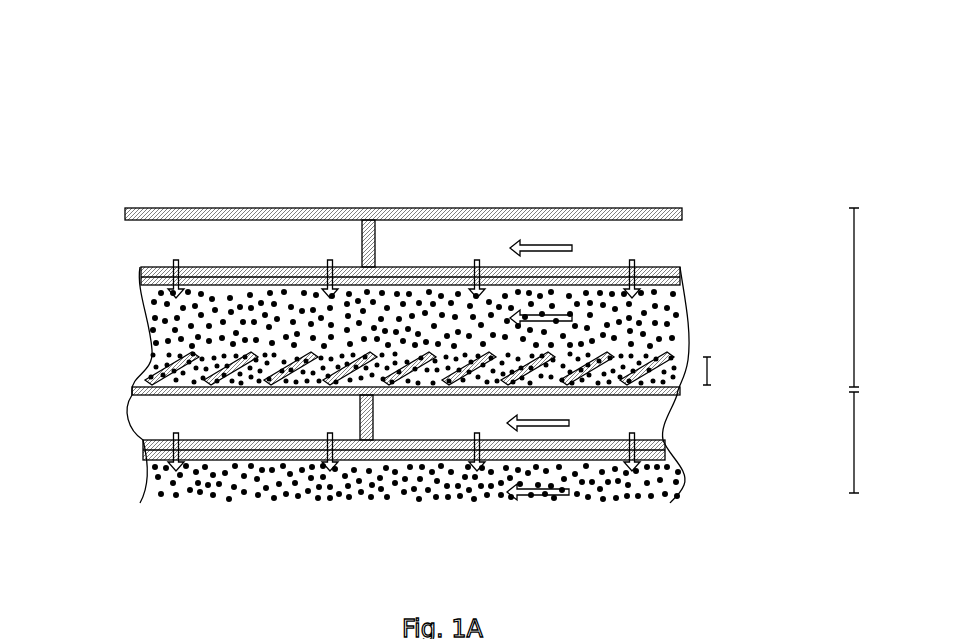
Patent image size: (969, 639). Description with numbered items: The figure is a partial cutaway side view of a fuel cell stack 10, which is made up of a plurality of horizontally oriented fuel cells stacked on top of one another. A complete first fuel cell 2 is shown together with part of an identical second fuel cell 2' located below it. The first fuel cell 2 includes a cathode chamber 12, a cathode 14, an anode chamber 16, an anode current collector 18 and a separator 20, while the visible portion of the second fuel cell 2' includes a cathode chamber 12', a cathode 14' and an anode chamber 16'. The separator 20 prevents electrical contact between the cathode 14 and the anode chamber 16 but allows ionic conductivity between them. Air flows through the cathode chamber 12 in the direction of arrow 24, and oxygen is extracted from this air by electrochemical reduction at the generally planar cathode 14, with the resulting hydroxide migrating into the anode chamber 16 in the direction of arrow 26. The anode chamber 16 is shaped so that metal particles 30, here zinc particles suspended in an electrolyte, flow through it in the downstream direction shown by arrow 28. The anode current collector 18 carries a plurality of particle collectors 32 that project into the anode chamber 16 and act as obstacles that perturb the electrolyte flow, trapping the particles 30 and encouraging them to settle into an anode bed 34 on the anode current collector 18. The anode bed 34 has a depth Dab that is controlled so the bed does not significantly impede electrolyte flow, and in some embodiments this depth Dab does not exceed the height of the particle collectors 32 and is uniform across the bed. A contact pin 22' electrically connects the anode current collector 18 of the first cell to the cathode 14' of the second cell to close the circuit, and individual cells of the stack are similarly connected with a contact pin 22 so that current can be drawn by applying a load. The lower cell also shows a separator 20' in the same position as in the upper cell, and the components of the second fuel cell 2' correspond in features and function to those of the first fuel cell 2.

The fuel cell stack 10 is at (168, 90).
The cathode chamber 12 is at (403, 182).
The cathode chamber 12' is at (632, 462).
The cathode 14 is at (410, 227).
The cathode 14' is at (404, 511).
The anode chamber 16 is at (410, 232).
The anode chamber 16' is at (365, 514).
The anode current collector 18 is at (182, 388).
The separator 20 is at (360, 317).
The second particle bed 20' is at (341, 475).
The contact pin 22 is at (398, 196).
The contact pin 22' is at (393, 481).
The arrow 24 is at (546, 248).
The arrow 26 is at (628, 290).
The arrow 28 is at (508, 325).
The metal particles 30 is at (365, 305).
The particle collectors 32 is at (421, 350).
The anode bed 34 is at (665, 342).
The first fuel cell 2 is at (890, 302).
The second fuel cell 2' is at (893, 454).
The depth of anode bed Dab is at (711, 370).